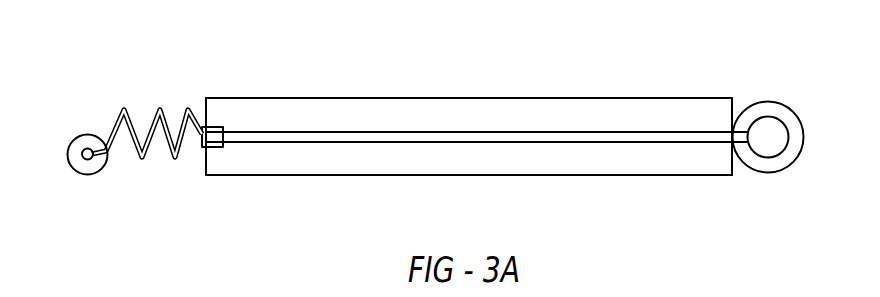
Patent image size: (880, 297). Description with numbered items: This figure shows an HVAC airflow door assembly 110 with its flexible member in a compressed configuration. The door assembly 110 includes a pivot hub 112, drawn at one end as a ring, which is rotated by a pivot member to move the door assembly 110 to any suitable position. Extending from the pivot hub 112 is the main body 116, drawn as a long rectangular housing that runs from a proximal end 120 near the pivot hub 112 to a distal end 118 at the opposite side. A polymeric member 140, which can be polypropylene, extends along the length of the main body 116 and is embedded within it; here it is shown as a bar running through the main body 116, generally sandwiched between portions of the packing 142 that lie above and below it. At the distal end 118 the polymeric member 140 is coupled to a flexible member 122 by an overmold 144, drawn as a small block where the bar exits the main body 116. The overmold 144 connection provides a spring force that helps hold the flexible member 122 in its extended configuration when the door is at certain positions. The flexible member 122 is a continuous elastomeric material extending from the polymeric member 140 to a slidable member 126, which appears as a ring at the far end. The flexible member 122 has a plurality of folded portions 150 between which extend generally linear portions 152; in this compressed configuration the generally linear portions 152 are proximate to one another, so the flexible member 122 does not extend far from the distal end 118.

The HVAC airflow door assembly 110 is at (486, 57).
The pivot hub 112 is at (787, 168).
The main body 116 is at (517, 175).
The distal end 118 is at (207, 164).
The proximal end 120 is at (727, 177).
The flexible member 122 is at (127, 160).
The slidable member 126 is at (69, 141).
The polymeric member 140 is at (572, 132).
The packing 142 is at (348, 113).
The overmold 144 is at (217, 127).
The folded portions 150 is at (188, 108).
The generally linear portions 152 is at (166, 152).